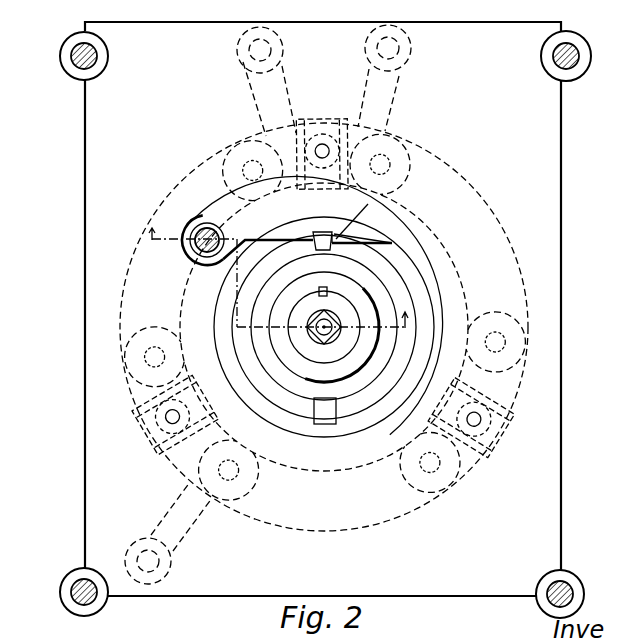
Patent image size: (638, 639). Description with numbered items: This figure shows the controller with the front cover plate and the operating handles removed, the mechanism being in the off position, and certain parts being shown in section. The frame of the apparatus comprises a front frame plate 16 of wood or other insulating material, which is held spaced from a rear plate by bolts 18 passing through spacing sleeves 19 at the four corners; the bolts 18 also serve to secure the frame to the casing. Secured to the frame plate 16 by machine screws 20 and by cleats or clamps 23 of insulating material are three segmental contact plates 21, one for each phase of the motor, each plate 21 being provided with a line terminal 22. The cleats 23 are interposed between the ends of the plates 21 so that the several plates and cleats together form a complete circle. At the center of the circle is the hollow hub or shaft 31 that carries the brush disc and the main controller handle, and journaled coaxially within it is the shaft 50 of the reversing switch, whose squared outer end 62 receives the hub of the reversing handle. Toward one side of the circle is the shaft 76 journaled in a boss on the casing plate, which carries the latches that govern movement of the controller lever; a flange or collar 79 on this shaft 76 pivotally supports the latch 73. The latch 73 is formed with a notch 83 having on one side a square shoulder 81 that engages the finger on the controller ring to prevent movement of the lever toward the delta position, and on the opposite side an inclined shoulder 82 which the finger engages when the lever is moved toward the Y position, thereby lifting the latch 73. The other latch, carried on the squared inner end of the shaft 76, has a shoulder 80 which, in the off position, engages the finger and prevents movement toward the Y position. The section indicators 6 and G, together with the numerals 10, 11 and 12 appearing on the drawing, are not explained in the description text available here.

The front frame plate 16 is at (557, 147).
The bolt 18 is at (82, 62).
The spacing sleeve 19 is at (66, 44).
The machine screw 20 is at (322, 150).
The segmental contact plate 21 is at (128, 300).
The line terminal 22 is at (248, 86).
The cleat 23 is at (329, 116).
The latch 73 is at (247, 213).
The shaft 76 is at (206, 238).
The collar 79 is at (204, 247).
The square shoulder 81 is at (300, 241).
The notch 83 is at (323, 232).
The inclined shoulder 82 is at (360, 215).
The shoulder 80 is at (342, 237).
The disc 12 is at (338, 240).
The hollow hub 31 is at (346, 305).
The shaft 50 is at (331, 312).
The housing 10 is at (414, 348).
The squared outer end 62 is at (329, 342).
The block 11 is at (328, 414).
The section line 6 is at (189, 269).
The section line G is at (324, 312).